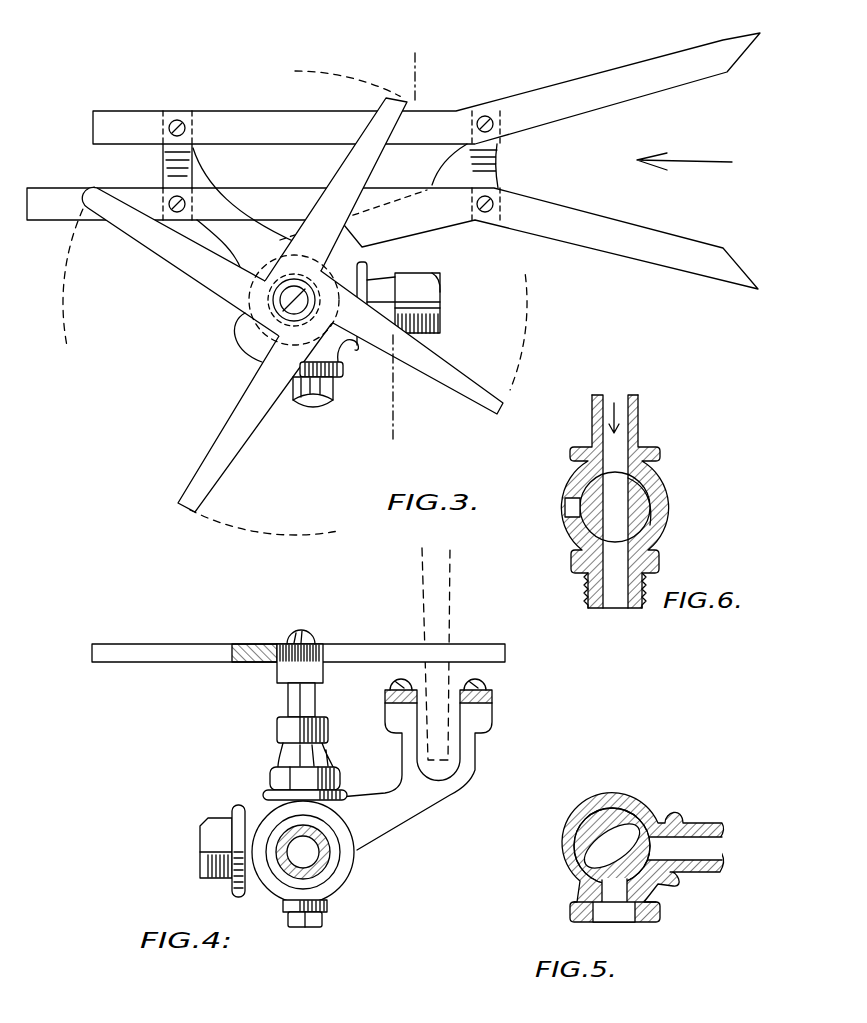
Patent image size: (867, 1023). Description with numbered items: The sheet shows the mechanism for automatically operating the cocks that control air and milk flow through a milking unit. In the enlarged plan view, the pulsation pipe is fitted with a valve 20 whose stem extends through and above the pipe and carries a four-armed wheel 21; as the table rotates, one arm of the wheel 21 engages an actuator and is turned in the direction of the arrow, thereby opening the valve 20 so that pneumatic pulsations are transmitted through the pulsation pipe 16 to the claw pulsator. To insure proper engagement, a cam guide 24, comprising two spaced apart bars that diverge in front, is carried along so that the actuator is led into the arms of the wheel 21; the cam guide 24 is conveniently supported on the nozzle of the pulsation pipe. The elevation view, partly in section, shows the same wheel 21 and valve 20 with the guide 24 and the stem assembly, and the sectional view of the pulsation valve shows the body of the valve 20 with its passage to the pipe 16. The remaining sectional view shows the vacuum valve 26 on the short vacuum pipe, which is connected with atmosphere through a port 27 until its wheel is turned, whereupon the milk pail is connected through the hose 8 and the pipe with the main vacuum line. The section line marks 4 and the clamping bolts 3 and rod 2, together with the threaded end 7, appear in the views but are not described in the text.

In FIG. 4, the rod 2 is at (452, 598).
In FIG. 3, the clamping bolt 3 is at (333, 394).
In FIG. 4, the clamping bolt 3 is at (205, 820).
In FIG. 5, the clamping bolt 3 is at (627, 922).
In FIG. 3, the section line 4- 4 is at (412, 246).
In FIG. 6, the threaded end 7 is at (640, 608).
In FIG. 6, the hose 8 is at (632, 397).
In FIG. 3, the pulsation pipe 16 is at (433, 308).
In FIG. 4, the pulsation pipe 16 is at (327, 872).
In FIG. 5, the pulsation pipe 16 is at (712, 823).
In FIG. 4, the valve 20 is at (287, 699).
In FIG. 5, the valve 20 is at (597, 812).
In FIG. 4, the four-armed wheel 21 is at (175, 645).
In FIG. 3, the cam guide 24 is at (300, 102).
In FIG. 4, the cam guide 24 is at (493, 698).
In FIG. 6, the valve 26 is at (645, 498).
In FIG. 6, the port 27 is at (567, 513).